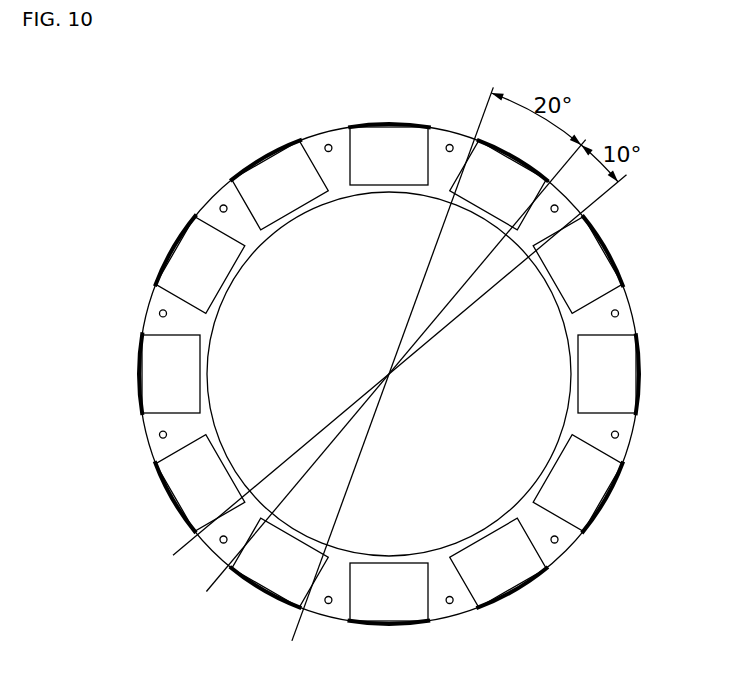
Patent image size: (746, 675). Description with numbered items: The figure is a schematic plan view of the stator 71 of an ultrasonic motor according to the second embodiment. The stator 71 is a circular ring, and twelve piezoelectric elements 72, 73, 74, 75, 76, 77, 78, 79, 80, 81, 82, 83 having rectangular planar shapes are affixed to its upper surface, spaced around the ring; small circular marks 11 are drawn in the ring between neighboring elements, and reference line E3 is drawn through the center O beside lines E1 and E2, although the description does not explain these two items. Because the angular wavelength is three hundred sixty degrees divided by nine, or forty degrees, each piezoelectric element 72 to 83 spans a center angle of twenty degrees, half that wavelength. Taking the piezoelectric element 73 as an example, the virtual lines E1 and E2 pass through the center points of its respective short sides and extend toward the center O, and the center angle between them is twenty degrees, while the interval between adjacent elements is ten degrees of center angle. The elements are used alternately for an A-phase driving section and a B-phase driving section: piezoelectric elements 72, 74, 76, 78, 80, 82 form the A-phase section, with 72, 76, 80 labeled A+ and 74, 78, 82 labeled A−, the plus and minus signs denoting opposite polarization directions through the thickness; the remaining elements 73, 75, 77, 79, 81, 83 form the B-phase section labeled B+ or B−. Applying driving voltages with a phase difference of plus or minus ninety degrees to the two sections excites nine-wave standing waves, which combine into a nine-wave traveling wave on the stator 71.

The stator 71 is at (149, 136).
The fixing hole 11 is at (220, 206).
The piezoelectric element 72 is at (500, 153).
The piezoelectric element 73 is at (611, 255).
The piezoelectric element 74 is at (638, 374).
The piezoelectric element 75 is at (612, 498).
The piezoelectric element 76 is at (524, 589).
The piezoelectric element 77 is at (389, 625).
The piezoelectric element 78 is at (265, 595).
The piezoelectric element 79 is at (174, 500).
The piezoelectric element 80 is at (139, 374).
The piezoelectric element 81 is at (178, 240).
The piezoelectric element 82 is at (274, 151).
The piezoelectric element 83 is at (388, 123).
The virtual line E1 is at (485, 110).
The virtual line E2 is at (568, 160).
The reference line E3 is at (612, 186).
The center O is at (390, 376).